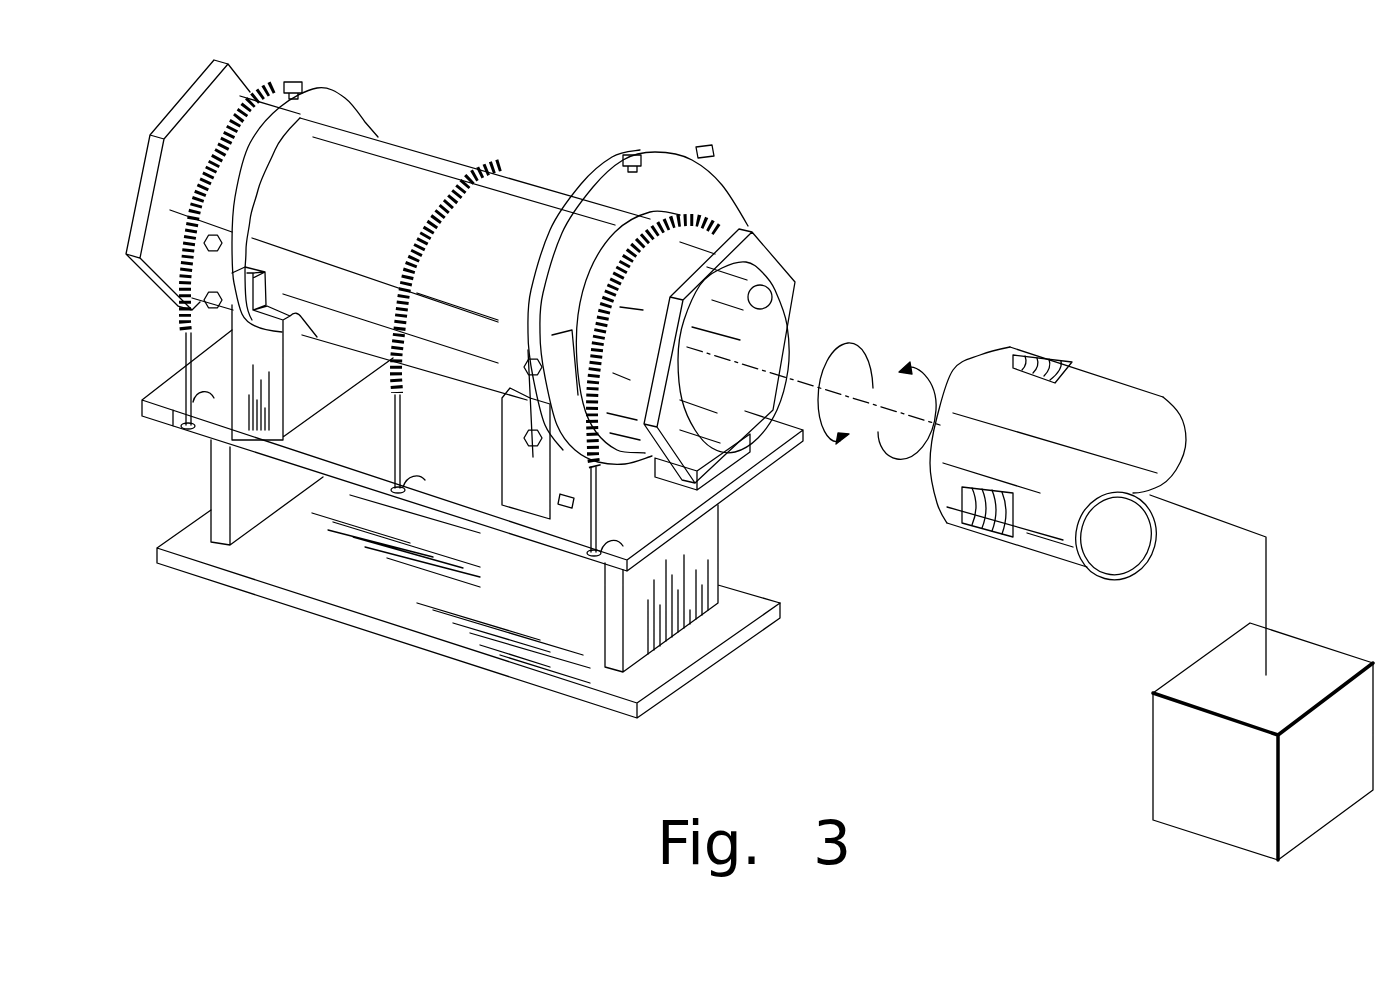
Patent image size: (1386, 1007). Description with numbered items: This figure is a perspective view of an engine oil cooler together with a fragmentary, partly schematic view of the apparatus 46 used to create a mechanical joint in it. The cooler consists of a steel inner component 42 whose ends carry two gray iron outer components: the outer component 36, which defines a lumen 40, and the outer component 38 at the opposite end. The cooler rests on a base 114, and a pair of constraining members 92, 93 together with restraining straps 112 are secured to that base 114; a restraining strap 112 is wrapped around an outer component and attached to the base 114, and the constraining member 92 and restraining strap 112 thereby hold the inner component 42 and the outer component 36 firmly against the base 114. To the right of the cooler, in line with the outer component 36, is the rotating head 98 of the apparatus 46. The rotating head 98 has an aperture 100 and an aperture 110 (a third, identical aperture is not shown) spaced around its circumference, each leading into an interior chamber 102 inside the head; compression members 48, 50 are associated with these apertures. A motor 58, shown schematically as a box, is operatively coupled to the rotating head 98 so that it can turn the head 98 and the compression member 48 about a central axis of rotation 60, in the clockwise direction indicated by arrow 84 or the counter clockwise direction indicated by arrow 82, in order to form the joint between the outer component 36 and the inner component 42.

The base 114 is at (367, 593).
The inner component 42 is at (404, 149).
The outer component 38 is at (222, 97).
The constraining member 93 is at (353, 113).
The constraining member 92 is at (677, 183).
The outer component 36 is at (692, 253).
The lumen 40 is at (772, 300).
The restraining strap 112 is at (265, 88).
The central axis of rotation 60 is at (810, 383).
The arrow 84 is at (845, 343).
The arrow 82 is at (890, 460).
The apparatus 46 is at (1084, 430).
The rotating head 98 is at (1107, 387).
The aperture 100 is at (1022, 348).
The compression member 48 is at (1040, 357).
The compression member 50 is at (990, 521).
The aperture 110 is at (1003, 543).
The interior chamber 102 is at (1123, 553).
The motor 58 is at (1318, 663).